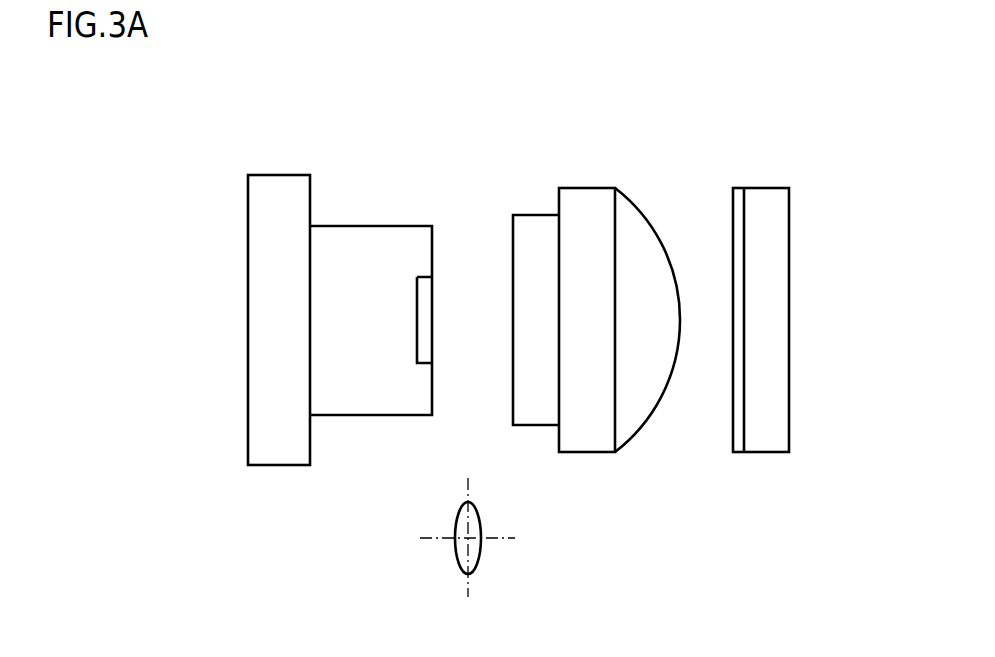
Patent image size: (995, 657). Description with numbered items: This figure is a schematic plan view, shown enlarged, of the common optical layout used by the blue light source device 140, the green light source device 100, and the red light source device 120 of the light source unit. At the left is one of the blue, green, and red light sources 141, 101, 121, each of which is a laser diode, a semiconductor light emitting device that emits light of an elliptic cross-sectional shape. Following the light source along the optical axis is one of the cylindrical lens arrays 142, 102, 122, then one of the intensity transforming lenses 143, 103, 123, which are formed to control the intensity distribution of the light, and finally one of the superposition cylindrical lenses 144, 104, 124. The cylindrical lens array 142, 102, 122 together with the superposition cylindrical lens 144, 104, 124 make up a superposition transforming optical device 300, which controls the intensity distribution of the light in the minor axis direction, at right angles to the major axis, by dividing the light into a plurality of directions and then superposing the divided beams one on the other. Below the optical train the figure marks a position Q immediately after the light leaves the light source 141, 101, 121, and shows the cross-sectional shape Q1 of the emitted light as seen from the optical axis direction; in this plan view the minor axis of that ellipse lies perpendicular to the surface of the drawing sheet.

The blue light source 141 is at (308, 277).
The green light source 101 is at (308, 277).
The red light source 121 is at (278, 197).
The blue light source device 140 is at (628, 228).
The green light source device 100 is at (628, 228).
The red light source device 120 is at (628, 228).
The cylindrical lens array 142 is at (470, 249).
The cylindrical lens array 102 is at (470, 249).
The cylindrical lens array 122 is at (538, 238).
The intensity transforming lens 143 is at (647, 271).
The intensity transforming lens 103 is at (647, 271).
The intensity transforming lens 123 is at (592, 215).
The superposition cylindrical lens 144 is at (796, 228).
The superposition cylindrical lens 104 is at (796, 228).
The superposition cylindrical lens 124 is at (763, 215).
The superposition transforming optical device 300 is at (628, 228).
The position Q is at (473, 400).
The cross-sectional shape of emitted light Q1 is at (501, 558).